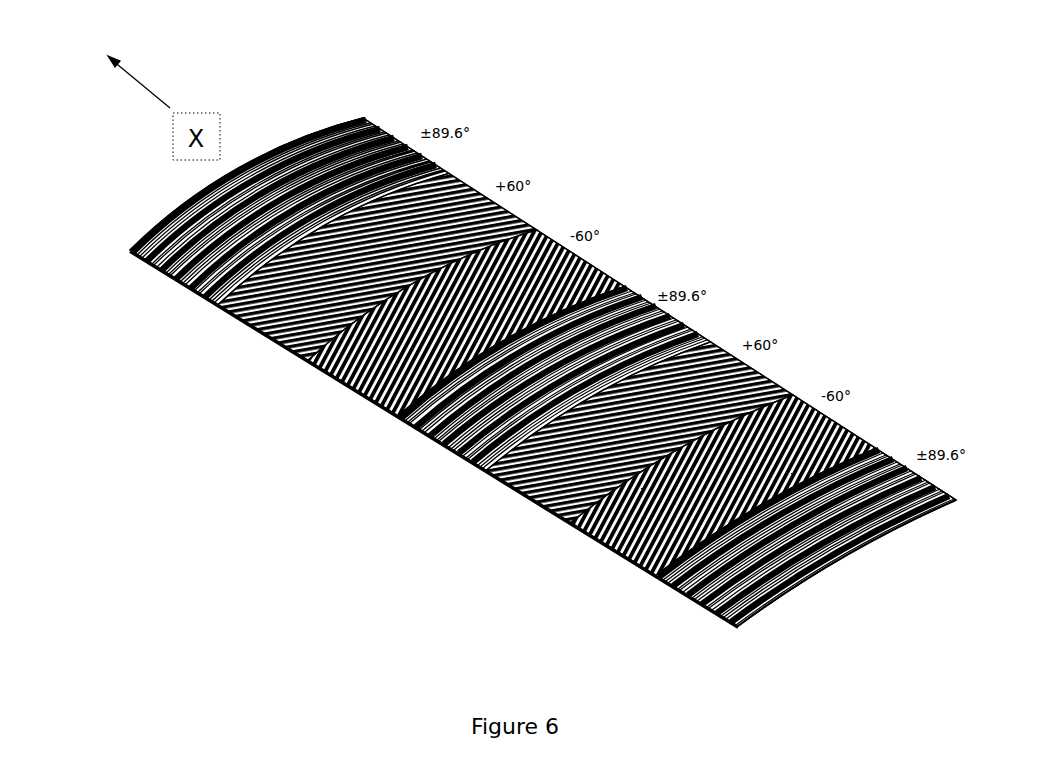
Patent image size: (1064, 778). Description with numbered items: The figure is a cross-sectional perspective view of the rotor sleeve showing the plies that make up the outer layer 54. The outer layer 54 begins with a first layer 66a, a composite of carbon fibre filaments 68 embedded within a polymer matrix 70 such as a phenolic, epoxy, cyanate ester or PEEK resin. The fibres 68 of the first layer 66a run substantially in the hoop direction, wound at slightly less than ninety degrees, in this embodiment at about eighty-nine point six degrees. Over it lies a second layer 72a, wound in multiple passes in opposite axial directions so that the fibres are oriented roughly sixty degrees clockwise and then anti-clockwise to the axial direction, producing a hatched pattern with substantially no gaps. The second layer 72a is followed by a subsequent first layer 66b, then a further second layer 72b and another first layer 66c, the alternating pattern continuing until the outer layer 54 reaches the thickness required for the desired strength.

The outer layer 54 is at (760, 205).
The first layer 66a is at (668, 585).
The subsequent first layer 66b is at (413, 418).
The subsequent first layer 66c is at (157, 268).
The second layer 72a is at (548, 520).
The second layer 72b is at (235, 320).
The carbon fibre filaments 68 is at (947, 482).
The polymer matrix 70 is at (942, 480).